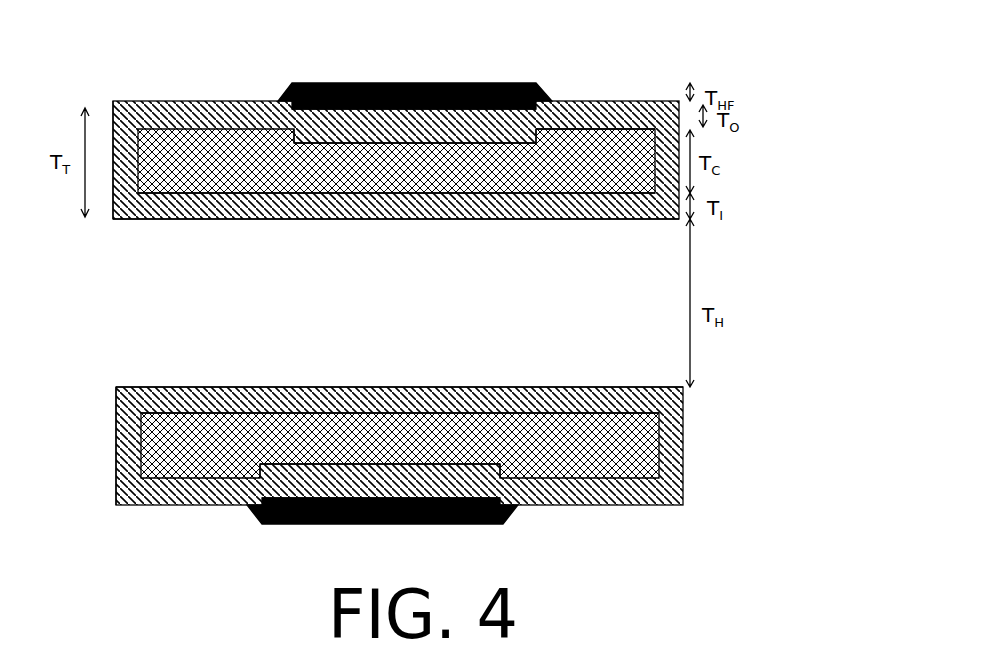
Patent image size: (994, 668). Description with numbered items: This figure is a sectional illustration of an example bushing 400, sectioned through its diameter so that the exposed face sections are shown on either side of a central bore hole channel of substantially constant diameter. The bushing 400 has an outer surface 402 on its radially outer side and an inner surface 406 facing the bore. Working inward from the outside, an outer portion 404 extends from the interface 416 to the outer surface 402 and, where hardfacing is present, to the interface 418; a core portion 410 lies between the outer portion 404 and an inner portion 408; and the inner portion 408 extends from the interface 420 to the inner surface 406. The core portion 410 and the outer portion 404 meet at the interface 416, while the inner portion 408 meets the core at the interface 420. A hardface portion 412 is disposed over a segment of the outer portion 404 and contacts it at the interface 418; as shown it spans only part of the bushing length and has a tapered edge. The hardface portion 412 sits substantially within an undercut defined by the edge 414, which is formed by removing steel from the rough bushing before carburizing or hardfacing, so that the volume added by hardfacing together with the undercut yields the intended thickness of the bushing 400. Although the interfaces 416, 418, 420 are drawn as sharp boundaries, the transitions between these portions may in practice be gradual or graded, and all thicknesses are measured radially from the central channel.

The bushing 400 is at (737, 50).
The outer surface 402 is at (152, 100).
The outer portion 404 is at (212, 108).
The inner surface 406 is at (230, 219).
The inner portion 408 is at (148, 207).
The core portion 410 is at (622, 175).
The hardface portion 412 is at (337, 83).
The edge 414 is at (537, 135).
The interface 416 is at (392, 143).
The interface 418 is at (455, 108).
The interface 420 is at (270, 193).